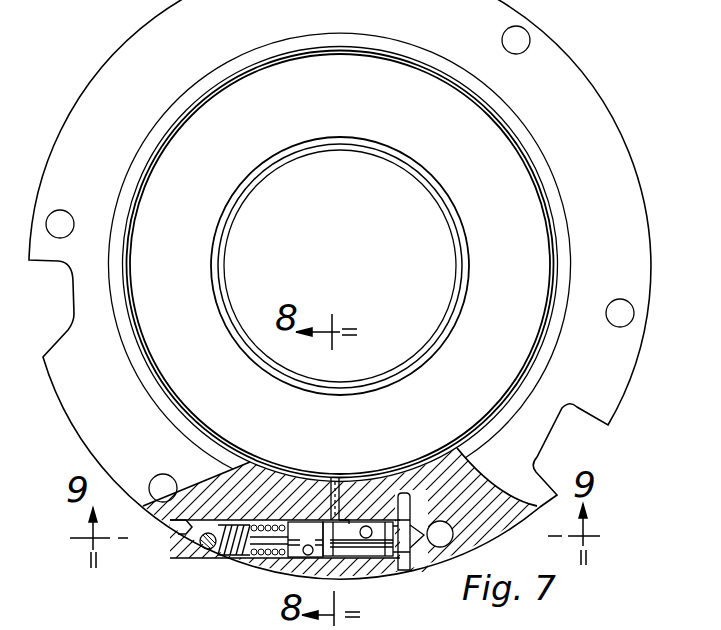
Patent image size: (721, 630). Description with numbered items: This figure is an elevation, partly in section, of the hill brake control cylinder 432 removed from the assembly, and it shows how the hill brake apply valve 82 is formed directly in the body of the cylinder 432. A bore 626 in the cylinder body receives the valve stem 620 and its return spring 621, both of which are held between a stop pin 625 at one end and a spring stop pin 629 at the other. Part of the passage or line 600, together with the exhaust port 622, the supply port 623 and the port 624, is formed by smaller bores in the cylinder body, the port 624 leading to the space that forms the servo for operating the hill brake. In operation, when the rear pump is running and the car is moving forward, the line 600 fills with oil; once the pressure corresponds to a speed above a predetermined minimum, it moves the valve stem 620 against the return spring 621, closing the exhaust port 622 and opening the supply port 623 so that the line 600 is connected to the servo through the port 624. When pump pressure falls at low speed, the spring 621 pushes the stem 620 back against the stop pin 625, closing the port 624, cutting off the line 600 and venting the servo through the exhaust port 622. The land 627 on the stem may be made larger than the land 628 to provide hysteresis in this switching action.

The cylinder 432 is at (607, 132).
The hill brake apply valve 82 is at (303, 530).
The line 600 is at (404, 570).
The valve stem 620 is at (340, 540).
The return spring 621 is at (240, 558).
The exhaust port 622 is at (362, 518).
The supply port 623 is at (292, 558).
The port 624 is at (342, 506).
The stop pin 625 is at (412, 552).
The bore 626 is at (184, 530).
The land 627 is at (313, 518).
The land 628 is at (382, 547).
The spring stop pin 629 is at (206, 550).